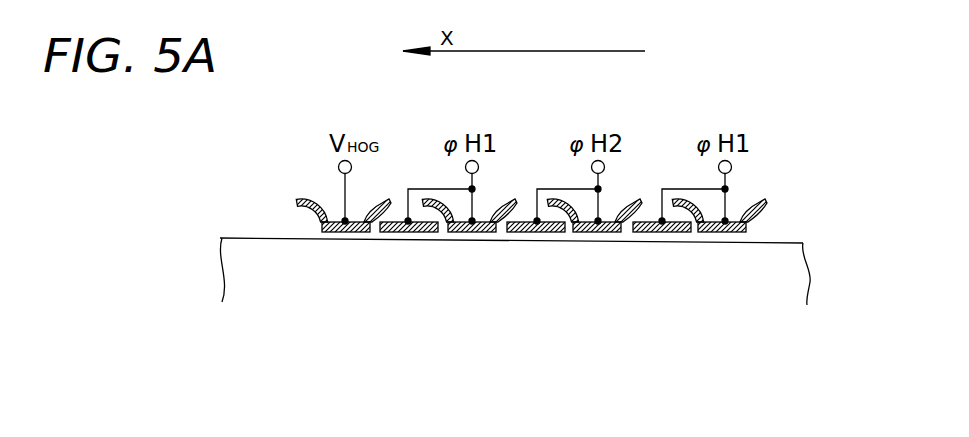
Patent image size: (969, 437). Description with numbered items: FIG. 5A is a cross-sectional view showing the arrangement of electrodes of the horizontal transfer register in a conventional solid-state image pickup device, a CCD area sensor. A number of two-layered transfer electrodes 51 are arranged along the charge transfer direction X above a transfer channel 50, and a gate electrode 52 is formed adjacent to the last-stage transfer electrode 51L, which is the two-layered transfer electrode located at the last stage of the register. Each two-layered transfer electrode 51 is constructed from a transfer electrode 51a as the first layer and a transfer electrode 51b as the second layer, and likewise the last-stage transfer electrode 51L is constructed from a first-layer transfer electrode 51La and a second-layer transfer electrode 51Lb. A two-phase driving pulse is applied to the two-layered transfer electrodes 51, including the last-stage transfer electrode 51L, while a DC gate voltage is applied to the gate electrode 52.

The transfer channel 50 is at (787, 268).
The gate electrode 52 is at (323, 227).
The last-stage transfer electrode 51L is at (434, 278).
The first-layer transfer electrode of last stage 51La is at (405, 233).
The second-layer transfer electrode of last stage 51Lb is at (469, 256).
The two-layered transfer electrode 51 is at (637, 278).
The first-layer transfer electrode 51a is at (532, 235).
The second-layer transfer electrode 51b is at (598, 235).